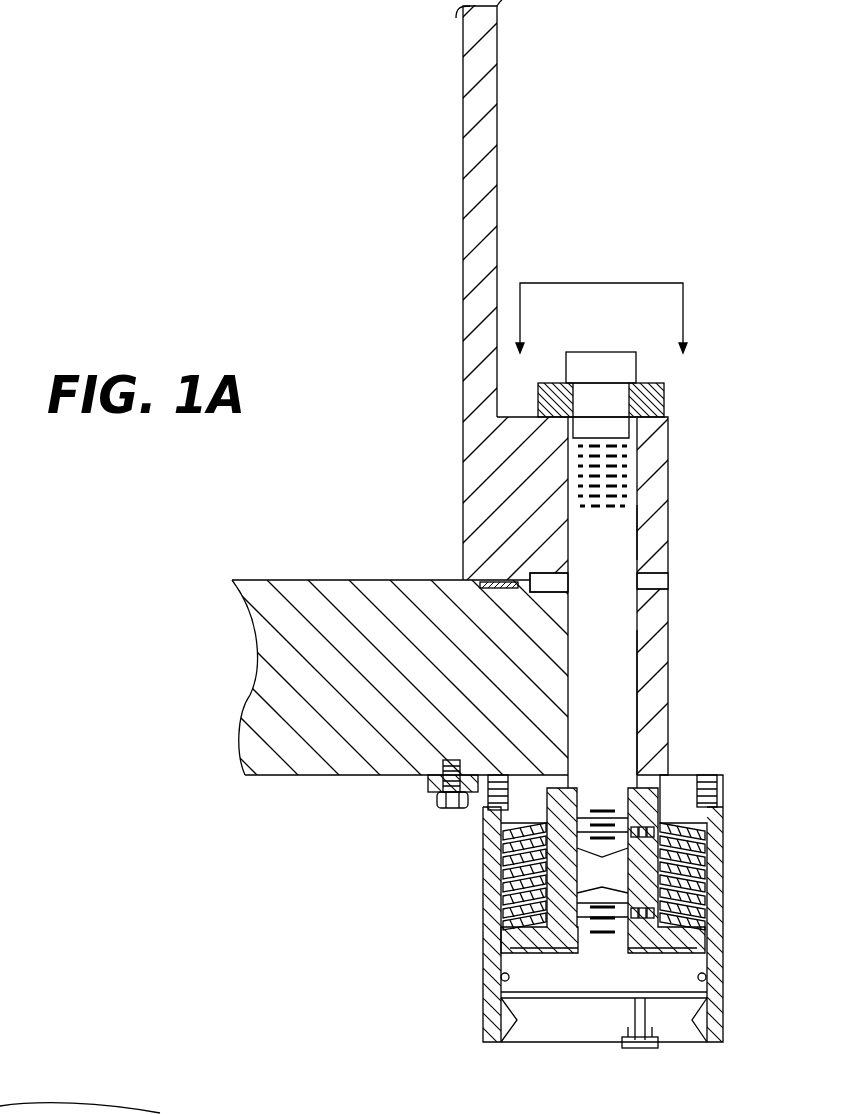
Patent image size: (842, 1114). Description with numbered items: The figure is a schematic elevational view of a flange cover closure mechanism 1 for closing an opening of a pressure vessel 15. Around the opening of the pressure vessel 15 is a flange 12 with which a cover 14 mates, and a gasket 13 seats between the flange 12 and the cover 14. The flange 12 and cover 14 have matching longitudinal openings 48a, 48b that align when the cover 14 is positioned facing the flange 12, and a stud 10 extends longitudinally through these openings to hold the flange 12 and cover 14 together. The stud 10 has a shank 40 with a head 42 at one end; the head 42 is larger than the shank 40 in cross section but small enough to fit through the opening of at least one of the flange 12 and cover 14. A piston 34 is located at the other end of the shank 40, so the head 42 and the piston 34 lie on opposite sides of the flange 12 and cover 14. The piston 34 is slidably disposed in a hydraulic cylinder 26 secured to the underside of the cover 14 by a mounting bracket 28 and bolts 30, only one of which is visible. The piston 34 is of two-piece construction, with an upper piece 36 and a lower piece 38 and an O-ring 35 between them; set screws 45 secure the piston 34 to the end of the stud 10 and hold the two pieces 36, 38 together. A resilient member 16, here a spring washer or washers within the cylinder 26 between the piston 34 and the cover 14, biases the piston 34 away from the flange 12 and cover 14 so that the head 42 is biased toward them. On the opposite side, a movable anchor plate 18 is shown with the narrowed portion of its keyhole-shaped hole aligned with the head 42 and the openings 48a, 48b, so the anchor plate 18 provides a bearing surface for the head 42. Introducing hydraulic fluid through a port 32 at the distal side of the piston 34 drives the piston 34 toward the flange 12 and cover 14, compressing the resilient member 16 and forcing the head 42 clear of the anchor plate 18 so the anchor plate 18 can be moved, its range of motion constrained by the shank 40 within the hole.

The flange cover closure mechanism 1 is at (421, 557).
The stud 10 is at (608, 625).
The flange 12 is at (665, 477).
The gasket 13 is at (478, 580).
The cover 14 is at (342, 598).
The pressure vessel 15 is at (353, 391).
The resilient member 16 is at (700, 878).
The anchor plate 18 is at (665, 408).
The hydraulic cylinder 26 is at (483, 875).
The mounting bracket 28 is at (419, 794).
The bolts 30 is at (447, 812).
The port 32 is at (641, 1054).
The piston 34 is at (522, 972).
The O-ring 35 is at (712, 973).
The upper piece 36 is at (490, 942).
The lower piece 38 is at (617, 979).
The shank 40 is at (625, 720).
The head 42 is at (596, 352).
The set screws 45 is at (658, 833).
The longitudinal opening 48a is at (633, 526).
The longitudinal opening 48b is at (630, 653).